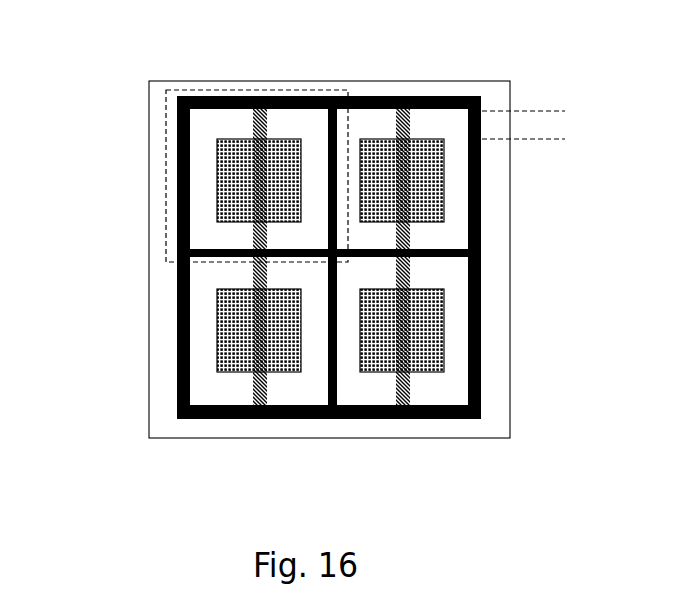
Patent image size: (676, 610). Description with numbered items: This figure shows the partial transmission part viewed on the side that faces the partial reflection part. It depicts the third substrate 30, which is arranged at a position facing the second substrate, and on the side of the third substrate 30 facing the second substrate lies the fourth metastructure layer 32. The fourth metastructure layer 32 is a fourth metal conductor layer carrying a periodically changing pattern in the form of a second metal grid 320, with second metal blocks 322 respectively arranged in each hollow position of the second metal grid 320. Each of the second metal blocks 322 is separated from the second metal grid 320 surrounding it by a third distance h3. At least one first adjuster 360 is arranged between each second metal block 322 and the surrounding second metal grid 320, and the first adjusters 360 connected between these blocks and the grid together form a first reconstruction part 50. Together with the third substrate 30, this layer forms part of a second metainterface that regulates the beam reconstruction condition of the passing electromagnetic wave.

The third substrate 30 is at (167, 329).
The first reconstruction part 50 is at (167, 128).
The fourth metastructure layer 32 is at (378, 90).
The second metal grid 320 is at (481, 256).
The second metal blocks 322 is at (277, 160).
The first adjusters 360 is at (412, 385).
The third distance h3 is at (537, 124).